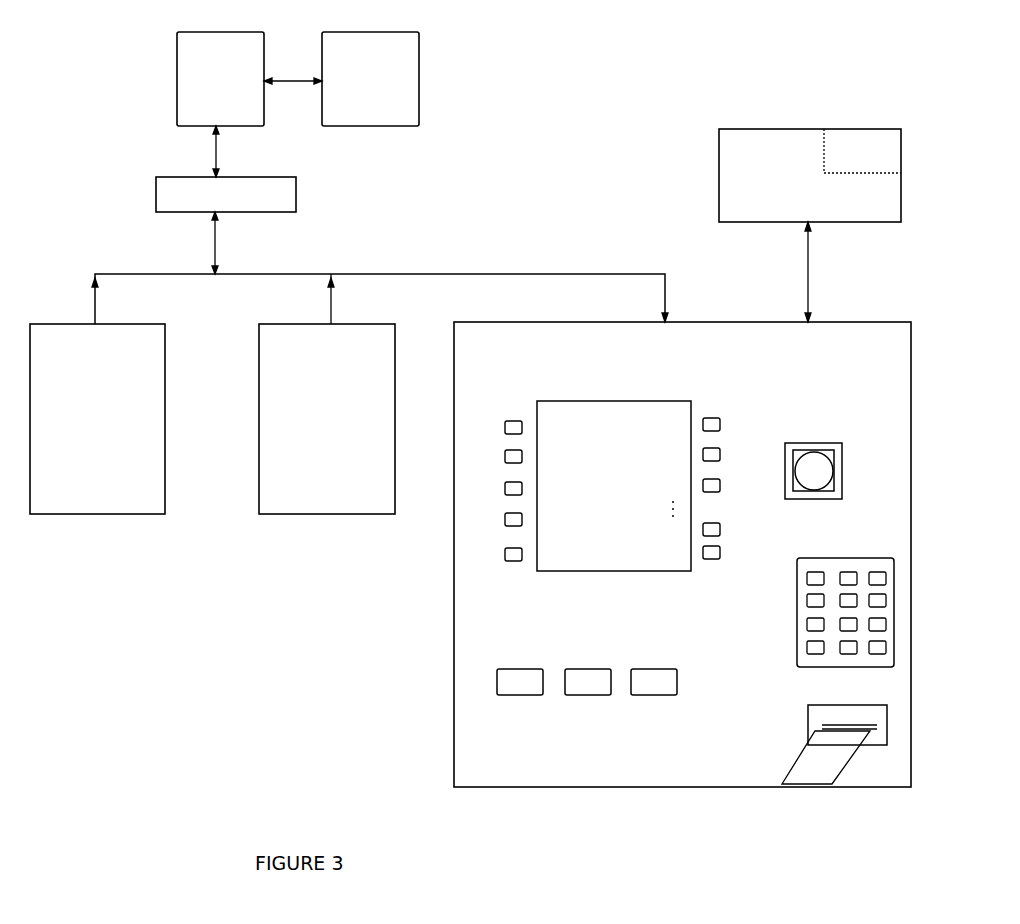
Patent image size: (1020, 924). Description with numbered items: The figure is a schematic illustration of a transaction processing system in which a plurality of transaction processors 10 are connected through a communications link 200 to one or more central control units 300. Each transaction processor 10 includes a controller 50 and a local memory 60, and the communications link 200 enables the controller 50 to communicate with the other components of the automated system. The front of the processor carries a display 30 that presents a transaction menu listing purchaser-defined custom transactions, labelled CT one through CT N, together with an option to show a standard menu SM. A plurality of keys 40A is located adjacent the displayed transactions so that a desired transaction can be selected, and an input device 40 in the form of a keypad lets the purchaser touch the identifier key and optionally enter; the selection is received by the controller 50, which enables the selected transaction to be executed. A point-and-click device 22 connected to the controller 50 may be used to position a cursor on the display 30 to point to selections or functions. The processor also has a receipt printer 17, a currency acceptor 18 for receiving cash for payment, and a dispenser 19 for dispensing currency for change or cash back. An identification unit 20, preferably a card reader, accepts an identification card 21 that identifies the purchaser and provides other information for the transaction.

The central control unit 300 is at (303, 79).
The communications link 200 is at (209, 200).
The transaction processor 10 is at (470, 544).
The controller 50 is at (810, 216).
The local memory 60 is at (862, 141).
The display 30 is at (614, 476).
The keys 40A is at (612, 473).
The point-and-click device 22 is at (813, 459).
The input device 40 is at (845, 603).
The receipt printer 17 is at (520, 674).
The currency acceptor 18 is at (588, 674).
The dispenser 19 is at (654, 674).
The identification unit 20 is at (847, 716).
The identification card 21 is at (829, 757).